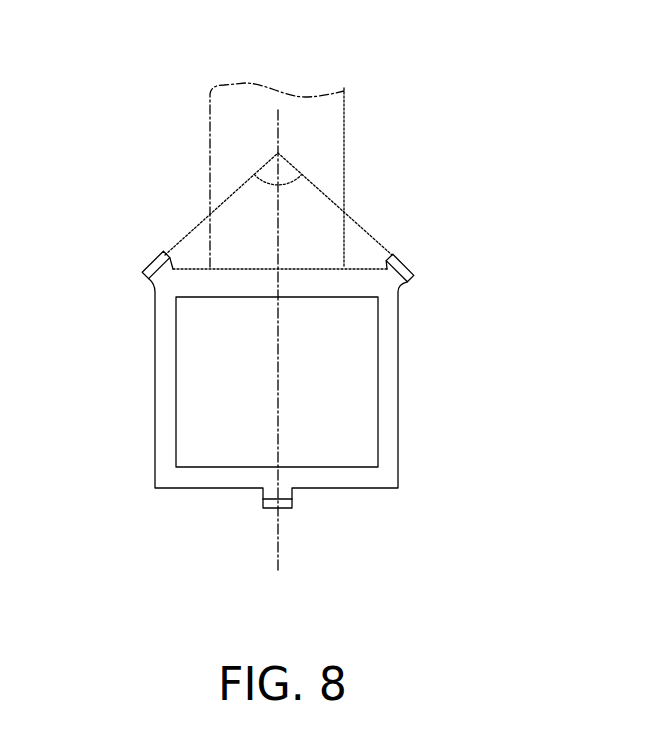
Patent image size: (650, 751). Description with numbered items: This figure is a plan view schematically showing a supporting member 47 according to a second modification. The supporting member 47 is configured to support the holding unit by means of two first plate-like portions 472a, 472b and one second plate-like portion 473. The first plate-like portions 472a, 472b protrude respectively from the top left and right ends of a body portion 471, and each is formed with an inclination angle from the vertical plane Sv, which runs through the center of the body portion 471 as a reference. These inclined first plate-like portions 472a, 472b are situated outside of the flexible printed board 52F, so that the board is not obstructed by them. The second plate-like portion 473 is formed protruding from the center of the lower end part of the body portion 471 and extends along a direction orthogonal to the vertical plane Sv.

The supporting member 47 is at (476, 77).
The body portion 471 is at (386, 423).
The first plate-like portion 472a is at (407, 264).
The first plate-like portion 472b is at (146, 267).
The second plate-like portion 473 is at (292, 500).
The flexible printed board 52F is at (333, 185).
The vertical plane Sv is at (278, 126).